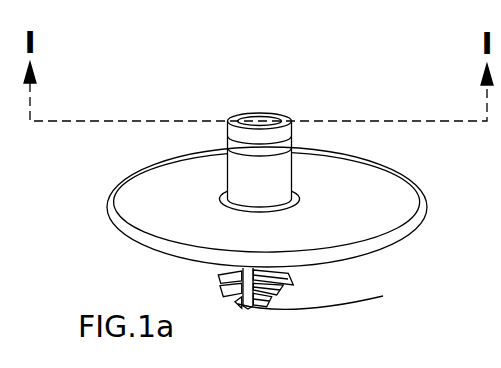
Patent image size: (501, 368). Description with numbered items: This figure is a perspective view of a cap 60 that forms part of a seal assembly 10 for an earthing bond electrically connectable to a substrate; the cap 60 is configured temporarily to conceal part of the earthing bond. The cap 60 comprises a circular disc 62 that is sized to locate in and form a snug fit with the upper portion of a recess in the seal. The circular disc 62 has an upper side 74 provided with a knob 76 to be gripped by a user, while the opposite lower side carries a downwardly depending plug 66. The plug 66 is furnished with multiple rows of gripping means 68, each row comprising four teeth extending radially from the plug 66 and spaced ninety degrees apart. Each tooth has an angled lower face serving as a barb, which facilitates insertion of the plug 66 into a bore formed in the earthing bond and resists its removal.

The seal assembly 10 is at (128, 175).
The cap 60 is at (362, 170).
The circular disc 62 is at (320, 167).
The upper side 74 is at (191, 172).
The knob 76 is at (257, 125).
The plug 66 is at (328, 293).
The gripping means 68 is at (218, 288).